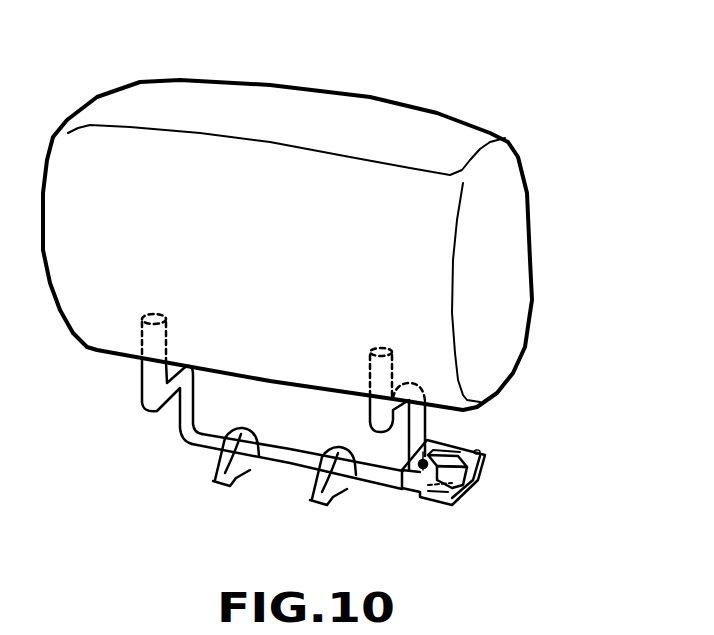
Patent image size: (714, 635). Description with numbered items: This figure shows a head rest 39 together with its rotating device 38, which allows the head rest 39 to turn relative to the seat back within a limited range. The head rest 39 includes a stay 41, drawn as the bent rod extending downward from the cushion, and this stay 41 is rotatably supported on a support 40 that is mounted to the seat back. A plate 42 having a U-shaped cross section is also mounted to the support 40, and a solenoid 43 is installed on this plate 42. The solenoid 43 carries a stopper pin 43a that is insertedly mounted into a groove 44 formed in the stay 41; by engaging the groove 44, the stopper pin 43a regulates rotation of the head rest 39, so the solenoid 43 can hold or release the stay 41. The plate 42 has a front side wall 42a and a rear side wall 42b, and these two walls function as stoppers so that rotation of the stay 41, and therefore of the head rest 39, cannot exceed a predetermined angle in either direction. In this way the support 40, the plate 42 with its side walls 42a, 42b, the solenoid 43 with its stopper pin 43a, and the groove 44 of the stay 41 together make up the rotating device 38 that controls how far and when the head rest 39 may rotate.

The rotating device 38 is at (318, 83).
The head rest 39 is at (397, 128).
The support 40 is at (232, 458).
The stay 41 is at (175, 417).
The plate 42 is at (465, 494).
The front side wall 42a is at (438, 490).
The rear side wall 42b is at (480, 448).
The solenoid 43 is at (482, 470).
The stopper pin 43a is at (433, 453).
The groove 44 is at (403, 467).